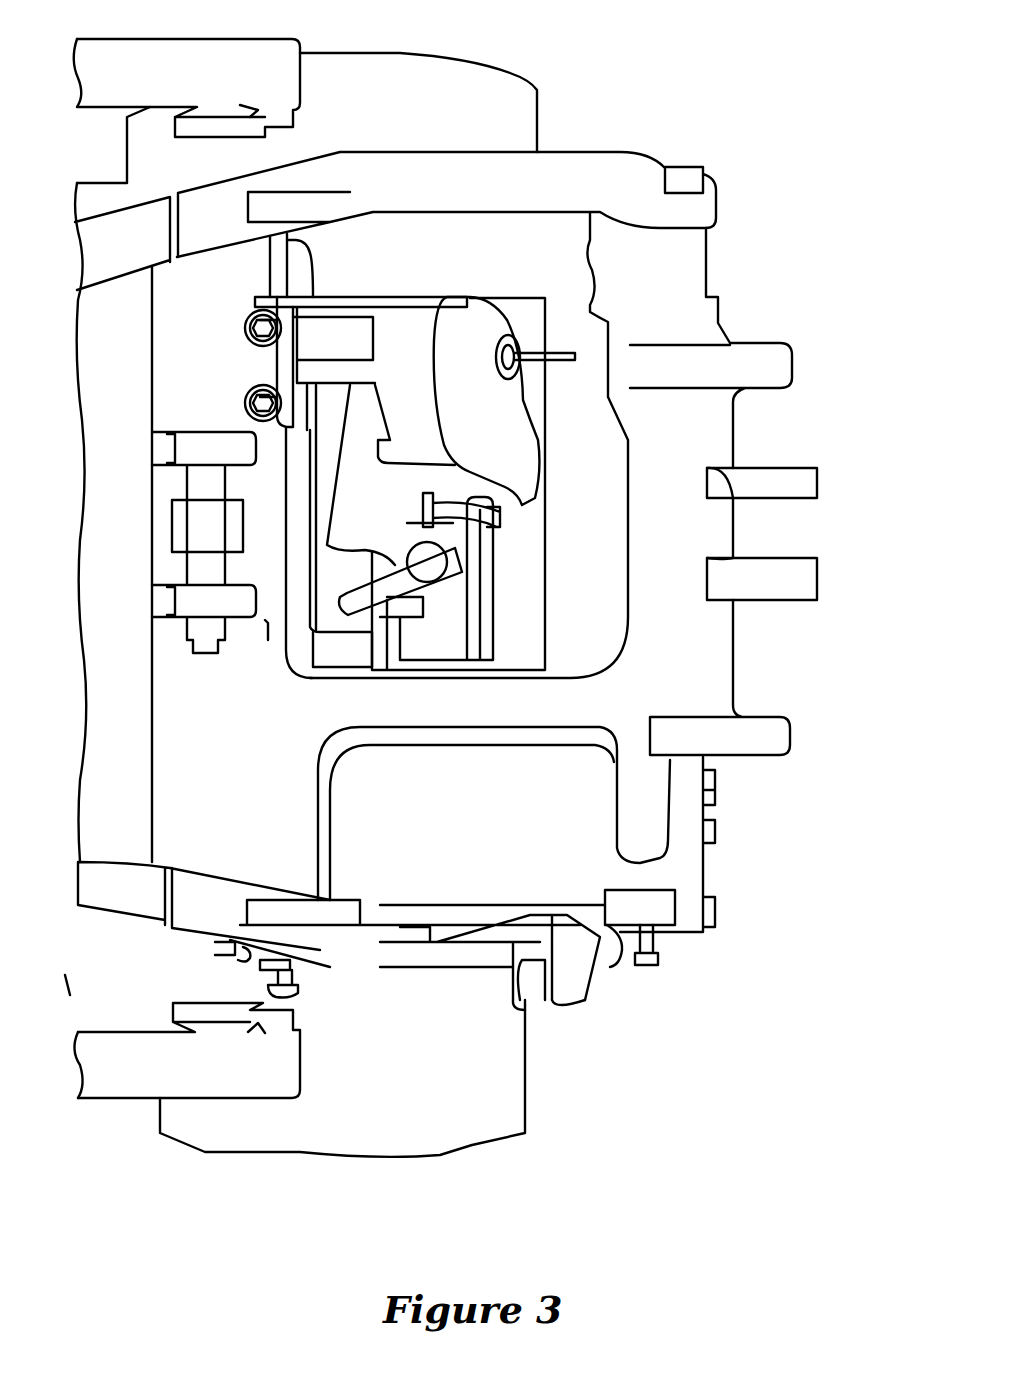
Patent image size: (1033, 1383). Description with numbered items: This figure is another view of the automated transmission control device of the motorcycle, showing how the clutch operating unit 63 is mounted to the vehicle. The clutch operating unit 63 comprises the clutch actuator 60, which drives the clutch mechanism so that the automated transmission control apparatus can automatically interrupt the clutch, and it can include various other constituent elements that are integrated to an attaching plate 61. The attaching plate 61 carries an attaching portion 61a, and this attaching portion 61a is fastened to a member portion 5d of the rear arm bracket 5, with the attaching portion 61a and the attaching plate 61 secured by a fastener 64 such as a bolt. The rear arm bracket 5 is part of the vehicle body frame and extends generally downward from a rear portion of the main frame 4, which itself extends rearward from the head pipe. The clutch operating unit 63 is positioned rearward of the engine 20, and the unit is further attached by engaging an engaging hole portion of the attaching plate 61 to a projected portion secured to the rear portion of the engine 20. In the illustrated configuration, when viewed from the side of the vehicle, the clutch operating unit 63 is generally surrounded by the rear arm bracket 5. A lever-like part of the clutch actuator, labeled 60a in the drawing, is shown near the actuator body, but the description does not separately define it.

The engine 20 is at (557, 72).
The member portion 5d is at (690, 267).
The rear arm bracket 5 is at (779, 431).
The main frame 4 is at (118, 850).
The clutch actuator 60 is at (551, 500).
The lever 60a is at (505, 533).
The attaching plate 61 is at (373, 295).
The attaching portion 61a is at (265, 365).
The clutch operating unit 63 is at (456, 282).
The fastener 64 is at (250, 325).